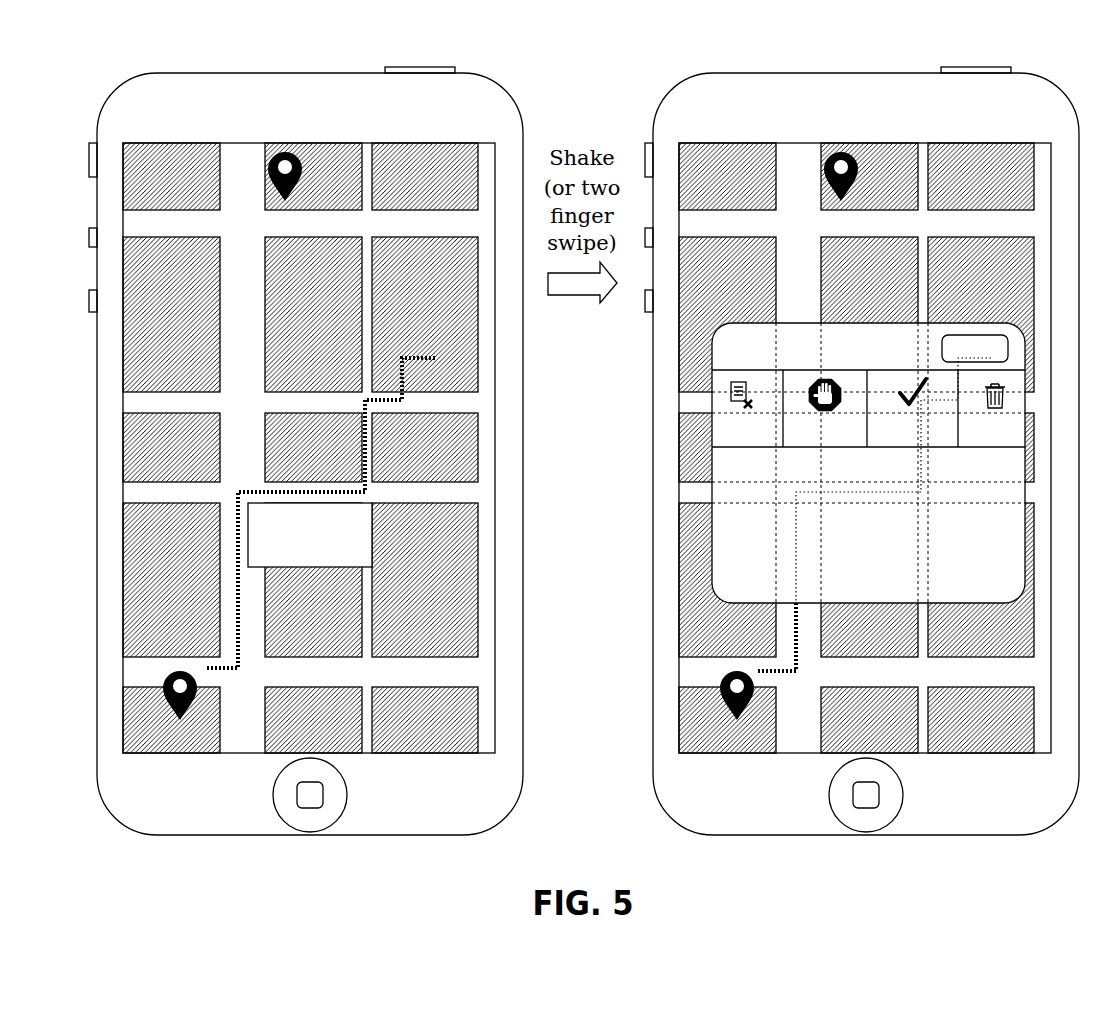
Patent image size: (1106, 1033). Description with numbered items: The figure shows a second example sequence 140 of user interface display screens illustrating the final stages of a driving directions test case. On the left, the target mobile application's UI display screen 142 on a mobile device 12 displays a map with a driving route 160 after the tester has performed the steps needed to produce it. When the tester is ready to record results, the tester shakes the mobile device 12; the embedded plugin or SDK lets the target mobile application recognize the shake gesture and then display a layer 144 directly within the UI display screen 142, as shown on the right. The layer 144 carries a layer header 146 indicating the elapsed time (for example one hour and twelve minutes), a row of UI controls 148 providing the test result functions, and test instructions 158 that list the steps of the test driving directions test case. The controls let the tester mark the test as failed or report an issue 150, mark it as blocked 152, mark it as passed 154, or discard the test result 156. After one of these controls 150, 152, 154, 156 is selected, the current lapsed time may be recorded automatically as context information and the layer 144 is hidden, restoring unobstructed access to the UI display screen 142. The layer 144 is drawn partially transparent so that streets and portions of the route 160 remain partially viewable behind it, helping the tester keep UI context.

The mobile device 12 is at (255, 71).
The second example sequence 140 is at (481, 48).
The UI display screen 142 is at (321, 140).
The layer 144 is at (807, 314).
The layer header 146 is at (258, 502).
The icon bar 148 is at (709, 403).
The UI control to mark a test as failed 150 is at (725, 440).
The UI control to mark a test as blocked 152 is at (810, 440).
The UI control to mark a test as passed 154 is at (905, 440).
The UI control to discard a test result 156 is at (980, 440).
The test instructions 158 is at (709, 493).
The driving route 160 is at (225, 672).